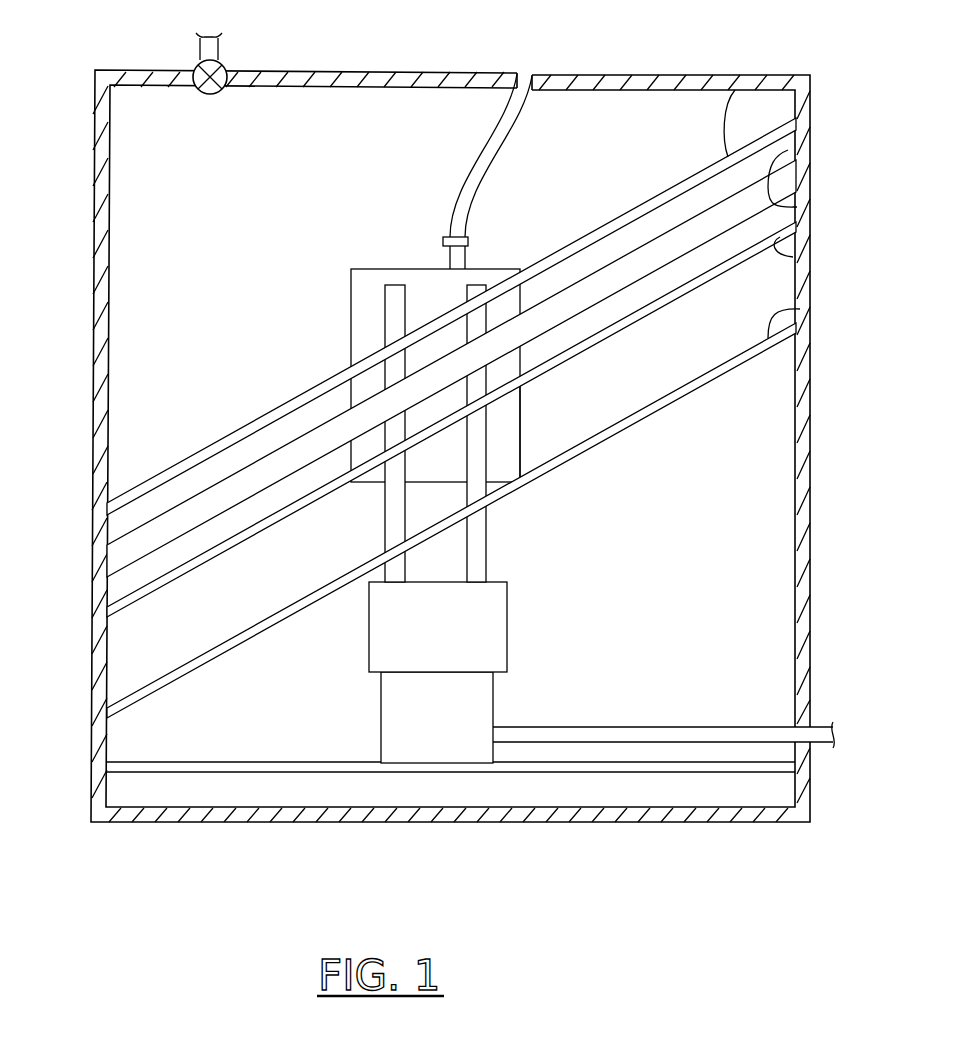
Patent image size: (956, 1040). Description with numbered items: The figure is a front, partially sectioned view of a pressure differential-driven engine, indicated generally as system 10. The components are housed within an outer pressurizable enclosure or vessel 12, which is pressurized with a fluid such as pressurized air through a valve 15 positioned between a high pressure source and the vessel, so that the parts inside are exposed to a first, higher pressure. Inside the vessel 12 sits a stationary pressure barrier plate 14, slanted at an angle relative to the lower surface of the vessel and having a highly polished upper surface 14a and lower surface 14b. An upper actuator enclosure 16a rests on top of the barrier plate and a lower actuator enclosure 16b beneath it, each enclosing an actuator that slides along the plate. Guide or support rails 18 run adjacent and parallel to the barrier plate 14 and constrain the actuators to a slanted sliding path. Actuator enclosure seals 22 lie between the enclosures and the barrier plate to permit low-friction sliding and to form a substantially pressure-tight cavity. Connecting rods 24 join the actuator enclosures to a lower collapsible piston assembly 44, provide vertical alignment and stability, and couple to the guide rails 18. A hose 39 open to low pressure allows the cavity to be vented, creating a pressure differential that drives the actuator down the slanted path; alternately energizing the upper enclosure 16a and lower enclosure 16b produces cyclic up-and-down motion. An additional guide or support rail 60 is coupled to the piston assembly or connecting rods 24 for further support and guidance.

The system 10 is at (193, 902).
The pressurizable enclosure or vessel 12 is at (94, 392).
The pressure barrier plate 14 is at (782, 180).
The upper surface 14a is at (797, 140).
The lower surface 14b is at (797, 210).
The valve 15 is at (219, 56).
The upper actuator enclosure 16a is at (352, 292).
The lower actuator enclosure 16b is at (520, 400).
The guide or support rails 18 is at (735, 90).
The actuator enclosure seals 22 is at (352, 405).
The connecting rods 24 is at (384, 520).
The hose 39 is at (513, 138).
The lower collapsible piston assembly 44 is at (513, 653).
The additional guide or support rail 60 is at (797, 312).